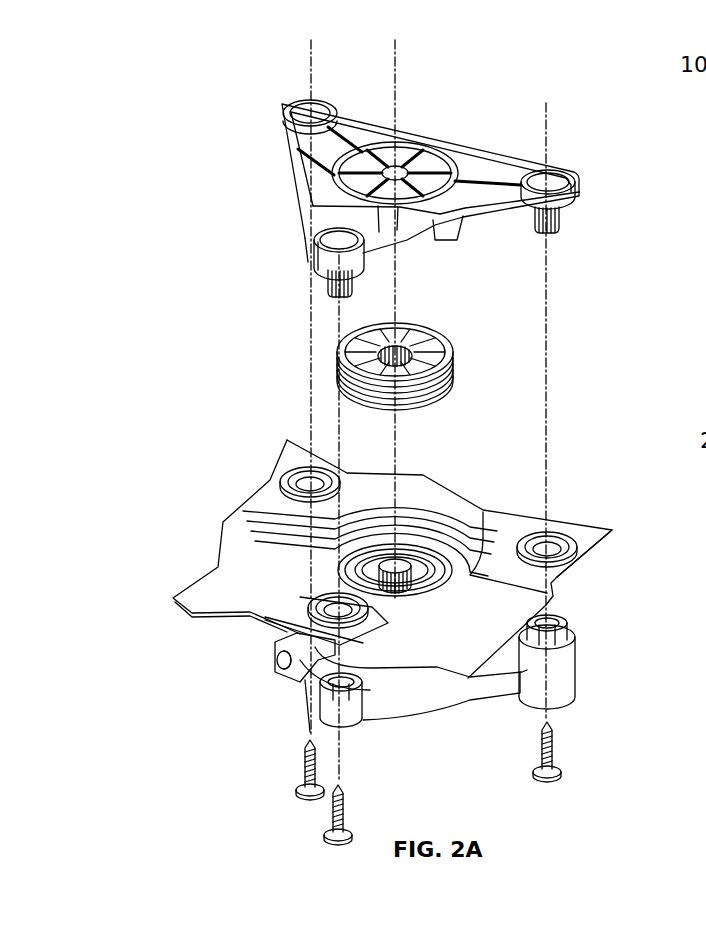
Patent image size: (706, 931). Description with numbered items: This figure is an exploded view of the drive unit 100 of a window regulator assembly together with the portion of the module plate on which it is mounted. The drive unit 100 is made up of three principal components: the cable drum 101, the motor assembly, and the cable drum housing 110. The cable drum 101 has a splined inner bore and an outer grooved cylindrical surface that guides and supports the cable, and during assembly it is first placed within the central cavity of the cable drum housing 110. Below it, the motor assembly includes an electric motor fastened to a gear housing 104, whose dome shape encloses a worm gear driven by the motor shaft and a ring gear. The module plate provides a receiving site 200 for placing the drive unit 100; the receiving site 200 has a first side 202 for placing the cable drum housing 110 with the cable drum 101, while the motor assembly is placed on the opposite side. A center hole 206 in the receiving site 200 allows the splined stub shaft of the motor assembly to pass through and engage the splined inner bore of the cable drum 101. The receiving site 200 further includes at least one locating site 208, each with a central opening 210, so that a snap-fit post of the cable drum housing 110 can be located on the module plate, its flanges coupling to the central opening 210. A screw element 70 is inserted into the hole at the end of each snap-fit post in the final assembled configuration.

The drive unit 100 is at (215, 126).
The cable drum housing 110 is at (312, 172).
The cable drum 101 is at (455, 373).
The receiving site 200 is at (196, 582).
The first side 202 is at (250, 563).
The center hole 206 is at (421, 550).
The locating site 208 is at (592, 524).
The central opening 210 is at (553, 548).
The gear housing 104 is at (575, 678).
The screw element 70 is at (298, 762).